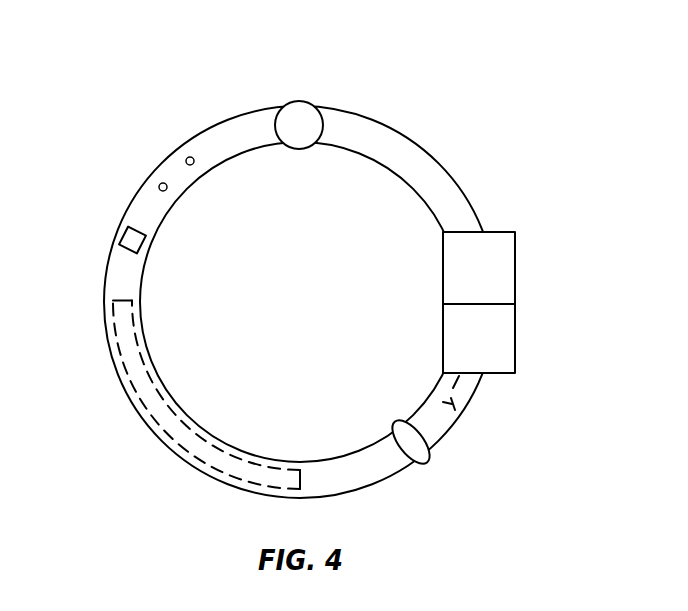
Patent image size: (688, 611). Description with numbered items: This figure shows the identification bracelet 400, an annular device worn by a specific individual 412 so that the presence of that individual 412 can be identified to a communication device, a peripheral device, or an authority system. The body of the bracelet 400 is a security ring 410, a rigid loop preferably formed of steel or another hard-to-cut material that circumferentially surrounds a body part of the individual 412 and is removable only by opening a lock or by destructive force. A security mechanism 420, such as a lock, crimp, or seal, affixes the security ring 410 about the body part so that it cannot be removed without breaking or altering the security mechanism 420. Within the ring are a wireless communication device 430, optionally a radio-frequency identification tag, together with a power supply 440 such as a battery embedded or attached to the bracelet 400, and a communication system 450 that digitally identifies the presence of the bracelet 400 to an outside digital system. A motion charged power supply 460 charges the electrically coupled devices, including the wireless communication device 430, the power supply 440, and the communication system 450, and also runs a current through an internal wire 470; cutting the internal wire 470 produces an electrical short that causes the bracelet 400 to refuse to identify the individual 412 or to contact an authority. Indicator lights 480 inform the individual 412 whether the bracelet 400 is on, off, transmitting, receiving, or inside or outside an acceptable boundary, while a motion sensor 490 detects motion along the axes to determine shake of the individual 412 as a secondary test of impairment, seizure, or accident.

The bracelet 400 is at (496, 51).
The security ring 410 is at (411, 140).
The individual 412 is at (319, 312).
The security mechanism 420 is at (306, 102).
The wireless communication device 430 is at (176, 408).
The power supply 440 is at (497, 232).
The communication system 450 is at (515, 343).
The motion charged power supply 460 is at (430, 455).
The internal wire 470 is at (464, 418).
The indicator light 480 is at (187, 158).
The motion sensor 490 is at (125, 231).